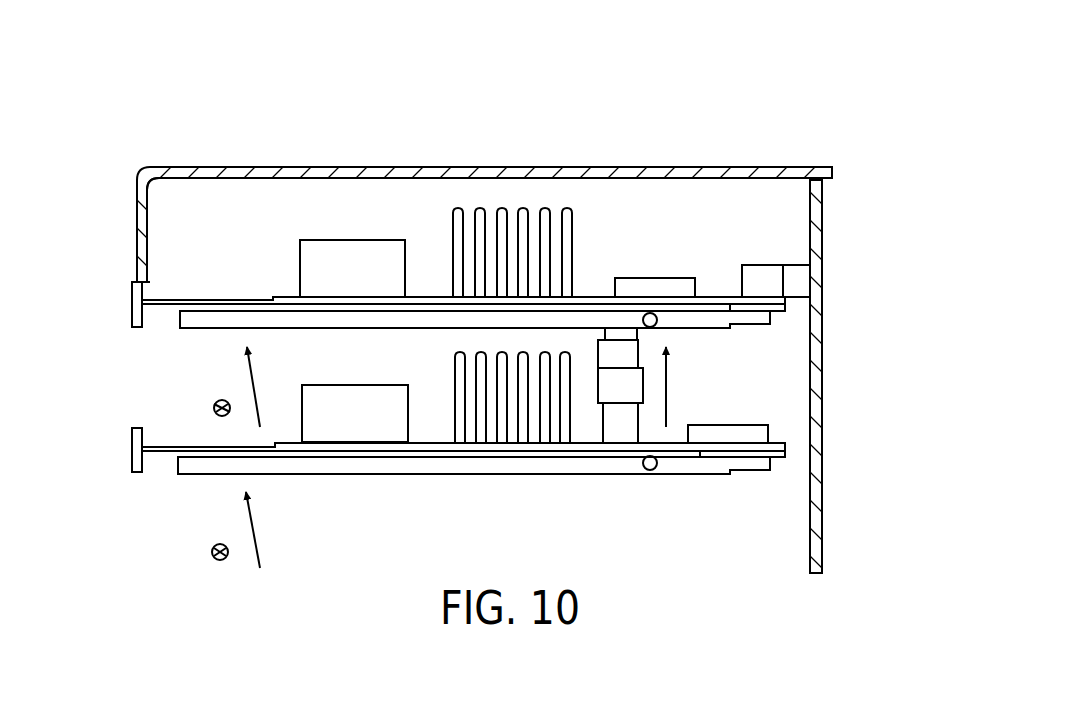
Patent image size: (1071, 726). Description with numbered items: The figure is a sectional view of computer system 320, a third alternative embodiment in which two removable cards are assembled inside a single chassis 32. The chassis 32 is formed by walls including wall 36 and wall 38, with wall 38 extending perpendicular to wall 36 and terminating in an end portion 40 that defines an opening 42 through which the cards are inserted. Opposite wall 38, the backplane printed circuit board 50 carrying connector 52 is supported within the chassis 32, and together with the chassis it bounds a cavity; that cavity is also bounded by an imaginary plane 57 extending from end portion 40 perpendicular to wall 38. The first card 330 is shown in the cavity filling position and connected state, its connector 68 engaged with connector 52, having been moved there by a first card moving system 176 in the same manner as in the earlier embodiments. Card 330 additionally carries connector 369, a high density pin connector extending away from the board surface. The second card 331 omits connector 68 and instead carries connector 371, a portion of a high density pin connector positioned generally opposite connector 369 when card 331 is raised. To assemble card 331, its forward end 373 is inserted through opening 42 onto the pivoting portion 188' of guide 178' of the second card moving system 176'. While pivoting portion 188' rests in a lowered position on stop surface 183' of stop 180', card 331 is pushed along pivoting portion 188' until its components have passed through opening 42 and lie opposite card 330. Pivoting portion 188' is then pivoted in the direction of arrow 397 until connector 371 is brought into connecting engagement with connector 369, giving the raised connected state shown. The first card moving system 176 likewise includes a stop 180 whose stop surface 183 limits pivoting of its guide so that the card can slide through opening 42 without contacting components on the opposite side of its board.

The computer system 320 is at (812, 131).
The chassis 32 is at (675, 167).
The wall 36 is at (344, 165).
The imaginary plane 57 is at (258, 195).
The wall 38 is at (137, 213).
The end portion 40 is at (150, 284).
The opening 42 is at (152, 296).
The card 330 is at (130, 290).
The card 331 is at (130, 433).
The card moving system 176 is at (457, 362).
The connector 68 is at (762, 270).
The connector 52 is at (796, 262).
The printed circuit board 50 is at (822, 395).
The connector 371 is at (642, 352).
The forward end 373 is at (777, 434).
The connector 369 is at (603, 334).
The pivoting portion 188' is at (474, 480).
The card moving system 176' is at (463, 502).
The guide 178' is at (527, 496).
The arrow 397 is at (254, 535).
The stop surface 183 is at (180, 399).
The stop 180 is at (186, 422).
The stop surface 183' is at (191, 530).
The stop 180' is at (239, 583).